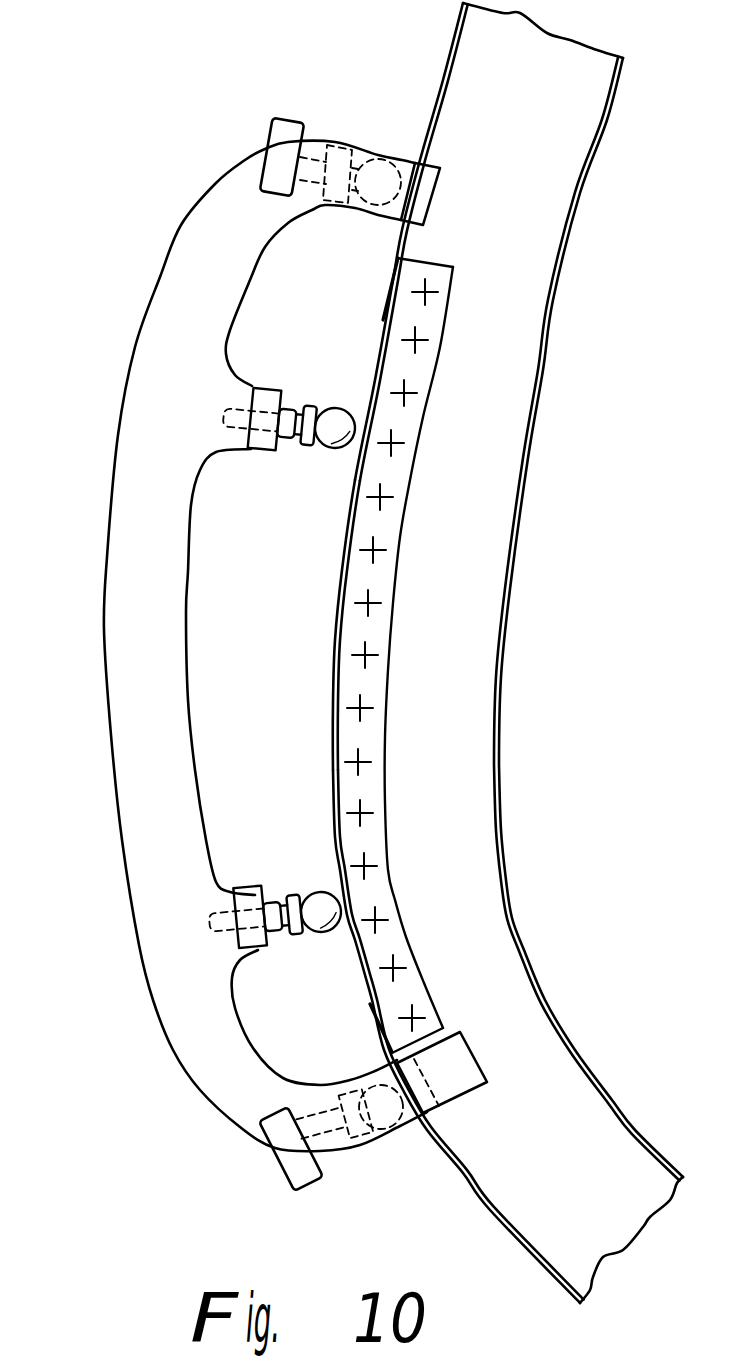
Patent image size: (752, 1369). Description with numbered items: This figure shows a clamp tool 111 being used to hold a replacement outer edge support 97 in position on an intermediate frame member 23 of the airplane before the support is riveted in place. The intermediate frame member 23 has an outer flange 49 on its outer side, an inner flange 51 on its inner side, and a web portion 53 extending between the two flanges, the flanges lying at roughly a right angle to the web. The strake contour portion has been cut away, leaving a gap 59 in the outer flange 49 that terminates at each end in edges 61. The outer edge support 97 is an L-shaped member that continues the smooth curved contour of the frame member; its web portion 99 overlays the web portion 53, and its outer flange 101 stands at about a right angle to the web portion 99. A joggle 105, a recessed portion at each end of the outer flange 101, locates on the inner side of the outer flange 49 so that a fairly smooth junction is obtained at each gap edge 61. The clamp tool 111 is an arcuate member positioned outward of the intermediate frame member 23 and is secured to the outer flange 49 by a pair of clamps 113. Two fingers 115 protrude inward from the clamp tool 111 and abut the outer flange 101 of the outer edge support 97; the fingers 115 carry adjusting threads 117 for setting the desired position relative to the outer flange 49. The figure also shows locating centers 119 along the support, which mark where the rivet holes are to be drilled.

The intermediate frame member 23 is at (514, 704).
The outer flange 49 is at (395, 272).
The inner flange 51 is at (501, 768).
The web portion 53 is at (465, 848).
The gap 59 is at (382, 318).
The edges 61 is at (372, 1010).
The outer edge support 97 is at (330, 745).
The web portion 99 is at (353, 628).
The outer flange 101 is at (333, 670).
The joggle 105 is at (391, 283).
The clamp tool 111 is at (137, 553).
The clamps 113 is at (400, 168).
The fingers 115 is at (350, 416).
The adjusting threads 117 is at (263, 900).
The locating centers 119 is at (397, 968).